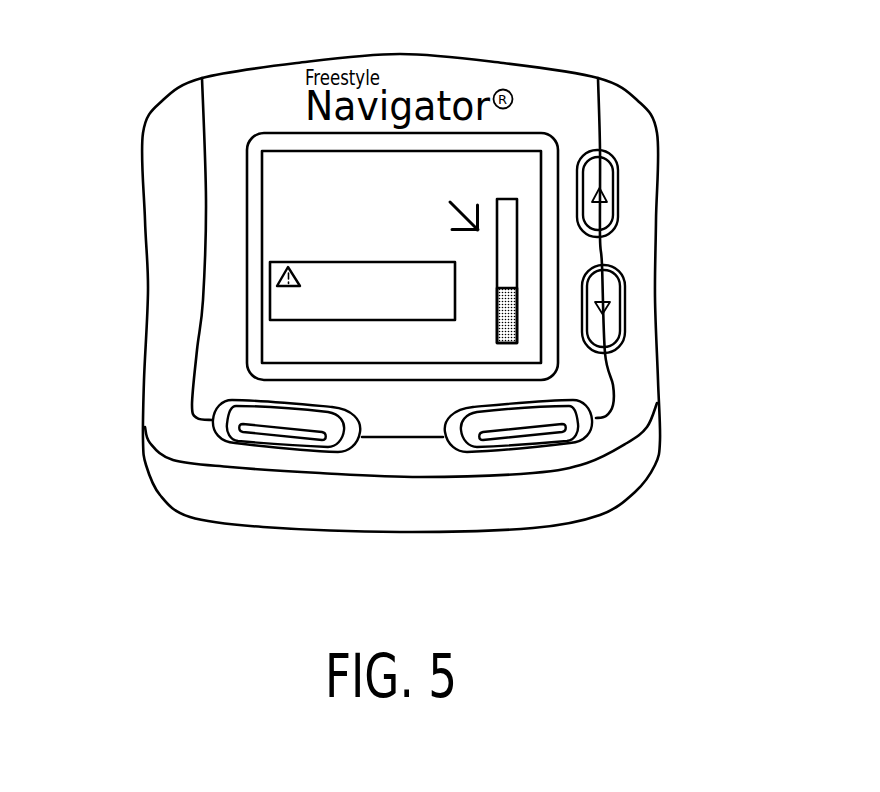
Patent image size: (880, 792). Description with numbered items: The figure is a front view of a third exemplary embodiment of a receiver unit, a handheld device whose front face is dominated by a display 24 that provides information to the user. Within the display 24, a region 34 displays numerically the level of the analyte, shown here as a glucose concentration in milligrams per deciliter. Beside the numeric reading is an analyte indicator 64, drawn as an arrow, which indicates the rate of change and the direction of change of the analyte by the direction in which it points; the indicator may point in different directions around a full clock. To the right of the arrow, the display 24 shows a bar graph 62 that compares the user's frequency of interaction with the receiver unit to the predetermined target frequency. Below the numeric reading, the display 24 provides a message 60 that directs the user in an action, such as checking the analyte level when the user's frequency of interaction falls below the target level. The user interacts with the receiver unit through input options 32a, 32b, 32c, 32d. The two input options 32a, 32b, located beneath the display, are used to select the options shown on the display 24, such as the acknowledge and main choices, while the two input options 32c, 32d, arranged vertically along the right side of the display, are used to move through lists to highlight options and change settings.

The display 24 is at (423, 177).
The region 34 is at (303, 223).
The message 60 is at (277, 278).
The bar graph 62 is at (510, 228).
The analyte indicator 64 is at (453, 200).
The input option 32a is at (263, 440).
The input option 32b is at (540, 440).
The input option 32c is at (607, 193).
The input option 32d is at (607, 323).